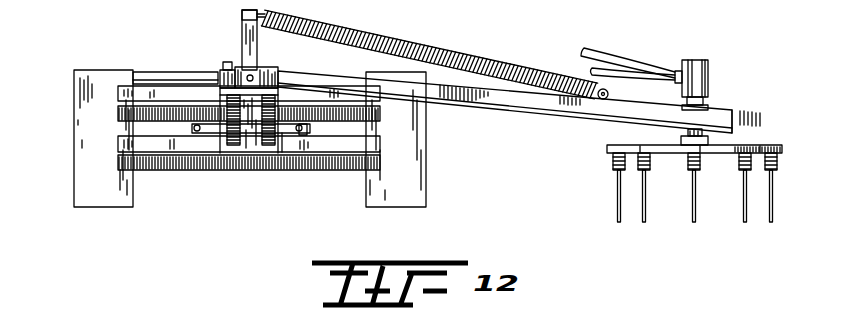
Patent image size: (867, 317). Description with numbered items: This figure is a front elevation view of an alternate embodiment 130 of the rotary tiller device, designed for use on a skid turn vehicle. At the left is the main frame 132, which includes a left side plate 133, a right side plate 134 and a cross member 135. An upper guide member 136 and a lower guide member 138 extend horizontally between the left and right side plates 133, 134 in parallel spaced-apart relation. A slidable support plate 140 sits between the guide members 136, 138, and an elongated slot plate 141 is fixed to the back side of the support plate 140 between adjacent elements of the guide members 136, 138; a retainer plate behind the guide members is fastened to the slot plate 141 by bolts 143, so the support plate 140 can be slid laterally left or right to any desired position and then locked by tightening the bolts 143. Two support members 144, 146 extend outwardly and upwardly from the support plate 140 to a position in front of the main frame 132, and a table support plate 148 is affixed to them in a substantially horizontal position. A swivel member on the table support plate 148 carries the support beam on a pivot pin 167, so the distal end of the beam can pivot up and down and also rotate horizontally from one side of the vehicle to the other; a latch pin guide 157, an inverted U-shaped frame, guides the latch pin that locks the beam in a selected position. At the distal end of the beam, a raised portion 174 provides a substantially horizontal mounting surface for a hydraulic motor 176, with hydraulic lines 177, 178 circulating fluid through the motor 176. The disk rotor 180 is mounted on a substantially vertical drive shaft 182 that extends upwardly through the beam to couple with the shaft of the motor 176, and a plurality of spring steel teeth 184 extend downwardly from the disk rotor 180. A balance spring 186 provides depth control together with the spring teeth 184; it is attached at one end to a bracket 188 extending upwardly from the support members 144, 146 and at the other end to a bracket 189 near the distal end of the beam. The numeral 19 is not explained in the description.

The pin heads 19 is at (748, 171).
The alternate embodiment 130 is at (551, 66).
The main frame 132 is at (162, 72).
The left side plate 133 is at (428, 173).
The right side plate 134 is at (74, 190).
The cross member 135 is at (348, 76).
The upper guide member 136 is at (118, 114).
The lower guide member 138 is at (118, 146).
The slidable support plate 140 is at (282, 153).
The elongated slot plate 141 is at (306, 135).
The bolts 143 is at (197, 131).
The support member 144 is at (268, 148).
The support member 146 is at (233, 148).
The table support plate 148 is at (273, 89).
The latch pin guide 157 is at (218, 72).
The pivot pin 167 is at (253, 77).
The raised portion 174 is at (733, 111).
The hydraulic motor 176 is at (710, 72).
The hydraulic line 177 is at (609, 68).
The hydraulic line 178 is at (599, 47).
The disk rotor 180 is at (765, 145).
The drive shaft 182 is at (680, 131).
The spring steel teeth 184 is at (746, 214).
The balance spring 186 is at (409, 45).
The bracket 188 is at (243, 16).
The bracket 189 is at (609, 95).